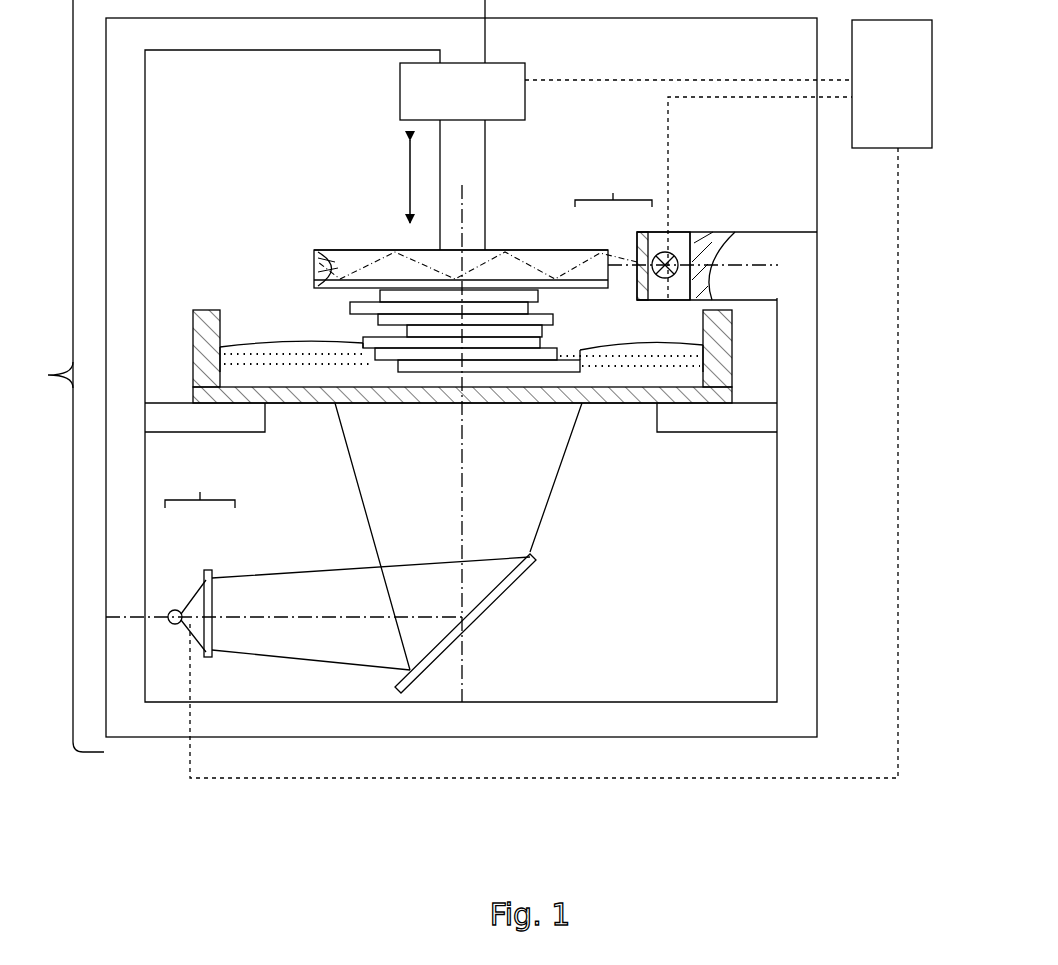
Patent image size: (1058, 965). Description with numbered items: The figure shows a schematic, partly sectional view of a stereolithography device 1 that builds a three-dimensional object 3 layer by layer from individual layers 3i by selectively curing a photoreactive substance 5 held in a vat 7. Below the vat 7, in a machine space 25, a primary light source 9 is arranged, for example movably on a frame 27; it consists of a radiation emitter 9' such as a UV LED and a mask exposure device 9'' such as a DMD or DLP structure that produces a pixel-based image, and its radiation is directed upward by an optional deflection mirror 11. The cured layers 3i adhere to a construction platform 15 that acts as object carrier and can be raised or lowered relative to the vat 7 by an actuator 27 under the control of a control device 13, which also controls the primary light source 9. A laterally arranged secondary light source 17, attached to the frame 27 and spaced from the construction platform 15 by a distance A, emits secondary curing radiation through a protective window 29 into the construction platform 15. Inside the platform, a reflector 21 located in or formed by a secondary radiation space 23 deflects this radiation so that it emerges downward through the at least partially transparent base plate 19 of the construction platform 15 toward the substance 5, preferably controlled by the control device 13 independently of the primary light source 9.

The stereolithography device 1 is at (415, 376).
The three-dimensional body or object 3 is at (435, 424).
The individual layers 3i is at (513, 358).
The photoreactive substance 5 is at (632, 352).
The vat 7 is at (742, 331).
The primary light source 9 is at (347, 566).
The radiation emitter 9' is at (176, 582).
The mask exposure device 9'' is at (226, 594).
The deflection mirror 11 is at (503, 598).
The control device 13 is at (878, 98).
The construction platform 15 is at (417, 224).
The secondary light source 17 is at (694, 204).
The base plate 19 is at (316, 278).
The reflector 21 is at (316, 253).
The secondary radiation space 23 is at (566, 280).
The machine space 25 is at (721, 680).
The frame / actuator 27 is at (448, 107).
The protective window 29 is at (647, 243).
The distance A is at (613, 184).